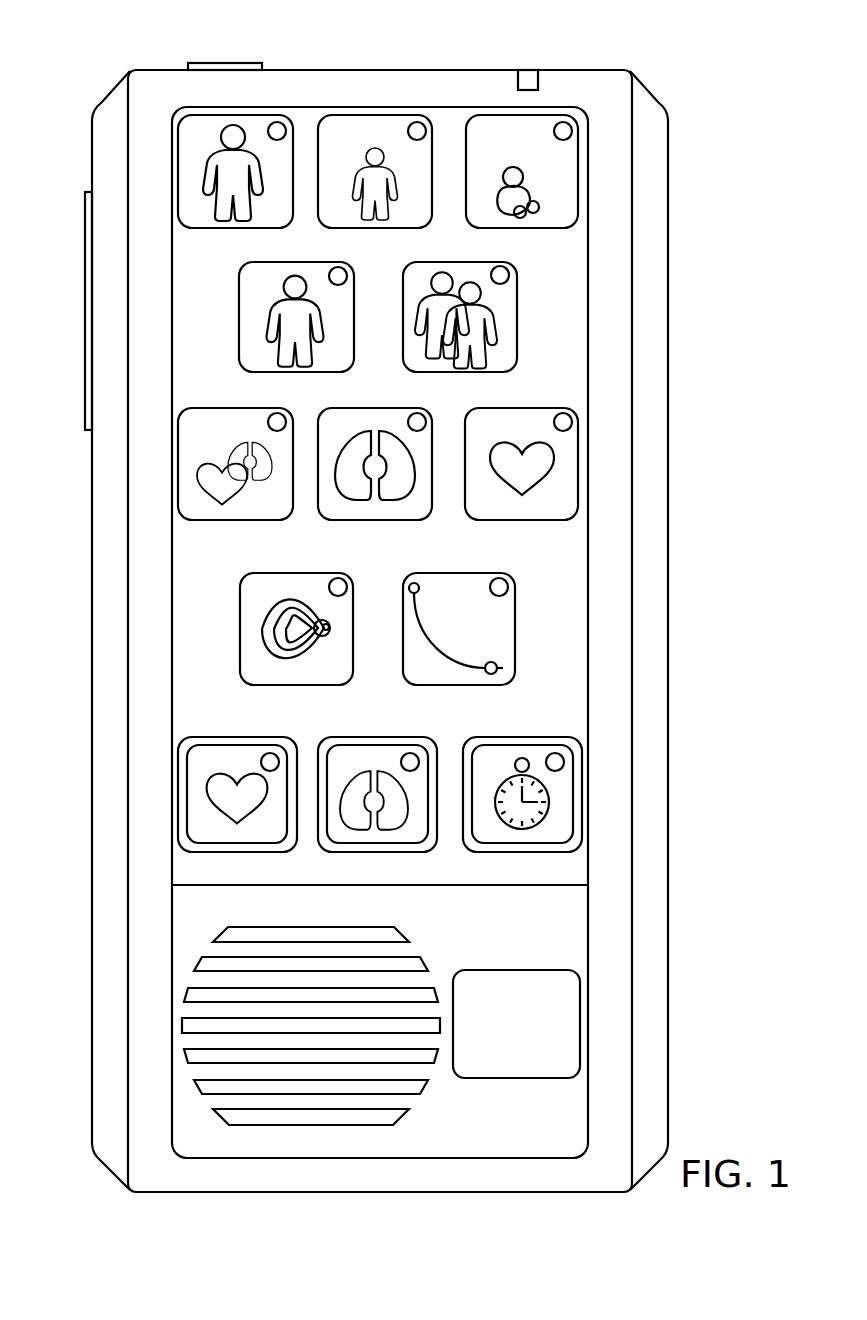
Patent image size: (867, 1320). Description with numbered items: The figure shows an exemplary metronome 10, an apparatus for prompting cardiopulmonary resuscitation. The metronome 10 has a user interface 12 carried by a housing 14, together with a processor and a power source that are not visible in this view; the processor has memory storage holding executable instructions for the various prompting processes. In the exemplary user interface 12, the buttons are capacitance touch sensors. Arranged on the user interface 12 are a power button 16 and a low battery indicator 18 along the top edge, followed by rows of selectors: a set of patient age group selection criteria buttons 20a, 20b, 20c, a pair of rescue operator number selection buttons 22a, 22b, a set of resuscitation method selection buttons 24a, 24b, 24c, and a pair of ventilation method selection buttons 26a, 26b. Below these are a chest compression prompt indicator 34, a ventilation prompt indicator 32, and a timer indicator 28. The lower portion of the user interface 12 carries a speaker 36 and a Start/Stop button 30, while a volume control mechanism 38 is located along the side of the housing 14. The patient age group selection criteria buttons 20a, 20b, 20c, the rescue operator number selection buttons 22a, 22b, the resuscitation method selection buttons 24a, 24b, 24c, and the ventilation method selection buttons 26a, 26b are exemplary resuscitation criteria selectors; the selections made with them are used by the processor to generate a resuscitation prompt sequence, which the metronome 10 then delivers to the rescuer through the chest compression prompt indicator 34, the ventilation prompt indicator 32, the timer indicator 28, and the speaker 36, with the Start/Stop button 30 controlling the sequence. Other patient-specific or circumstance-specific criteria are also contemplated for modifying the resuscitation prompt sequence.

The metronome 10 is at (686, 105).
The user interface 12 is at (400, 106).
The housing 14 is at (92, 130).
The power button 16 is at (226, 63).
The low battery indicator 18 is at (528, 70).
The patient age group selection criteria button 20a is at (233, 115).
The patient age group selection criteria button 20b is at (375, 115).
The patient age group selection criteria button 20c is at (508, 115).
The rescue operator number selection button 22a is at (239, 322).
The rescue operator number selection button 22b is at (517, 322).
The resuscitation method selection button 24a is at (237, 409).
The resuscitation method selection button 24b is at (318, 495).
The resuscitation method selection button 24c is at (523, 408).
The ventilation method selection button 26a is at (240, 630).
The ventilation method selection button 26b is at (515, 630).
The timer indicator 28 is at (515, 740).
The Start/Stop button 30 is at (517, 970).
The ventilation prompt indicator 32 is at (388, 740).
The chest compression prompt indicator 34 is at (235, 740).
The speaker 36 is at (198, 1109).
The volume control mechanism 38 is at (80, 315).